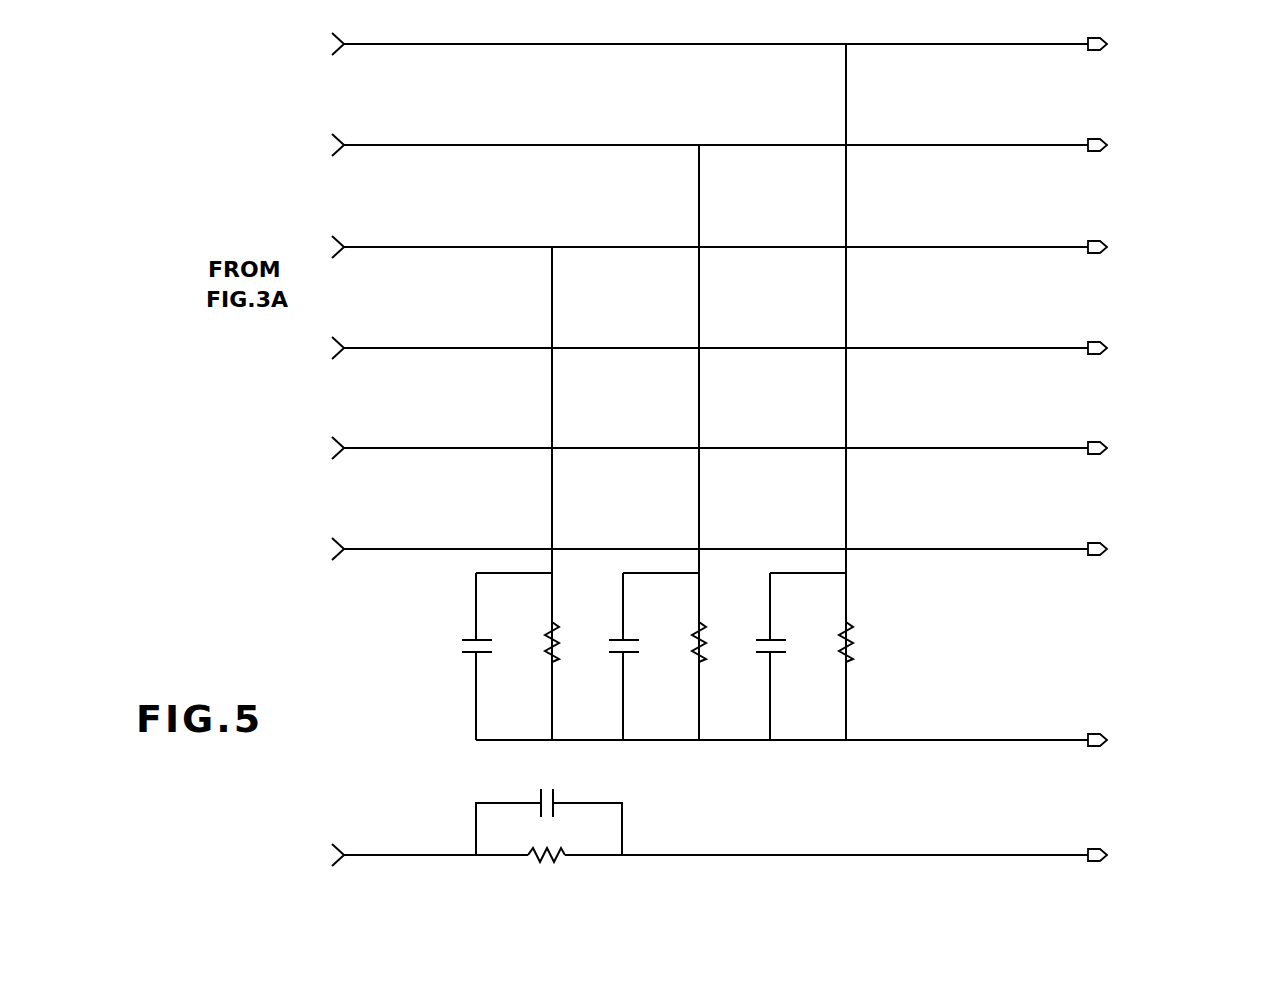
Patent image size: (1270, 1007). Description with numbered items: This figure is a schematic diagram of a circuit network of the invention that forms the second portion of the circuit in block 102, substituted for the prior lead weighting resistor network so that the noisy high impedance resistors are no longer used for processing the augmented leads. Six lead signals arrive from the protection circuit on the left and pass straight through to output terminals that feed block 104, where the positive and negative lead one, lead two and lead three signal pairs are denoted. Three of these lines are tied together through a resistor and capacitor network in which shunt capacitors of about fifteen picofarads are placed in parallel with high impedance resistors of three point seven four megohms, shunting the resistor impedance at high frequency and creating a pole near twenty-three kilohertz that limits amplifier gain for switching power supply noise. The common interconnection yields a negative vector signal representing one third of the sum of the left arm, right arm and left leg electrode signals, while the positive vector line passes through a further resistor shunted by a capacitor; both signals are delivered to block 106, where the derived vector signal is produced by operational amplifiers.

The block 102 is at (352, 664).
The block 104 is at (1184, 276).
The block 106 is at (1166, 766).